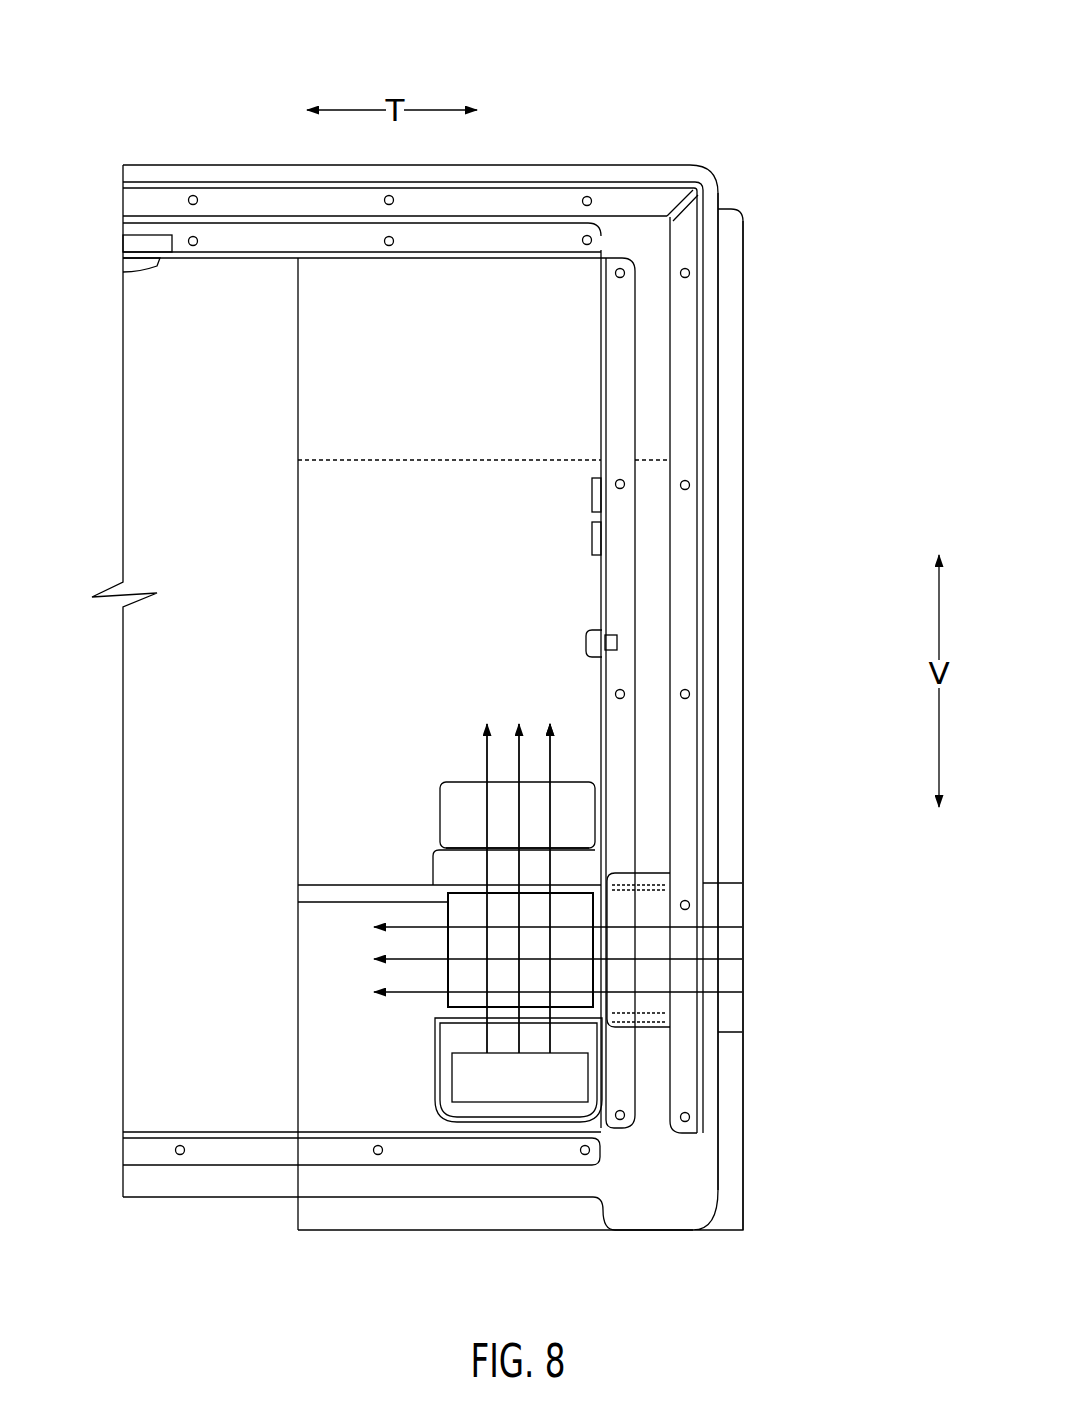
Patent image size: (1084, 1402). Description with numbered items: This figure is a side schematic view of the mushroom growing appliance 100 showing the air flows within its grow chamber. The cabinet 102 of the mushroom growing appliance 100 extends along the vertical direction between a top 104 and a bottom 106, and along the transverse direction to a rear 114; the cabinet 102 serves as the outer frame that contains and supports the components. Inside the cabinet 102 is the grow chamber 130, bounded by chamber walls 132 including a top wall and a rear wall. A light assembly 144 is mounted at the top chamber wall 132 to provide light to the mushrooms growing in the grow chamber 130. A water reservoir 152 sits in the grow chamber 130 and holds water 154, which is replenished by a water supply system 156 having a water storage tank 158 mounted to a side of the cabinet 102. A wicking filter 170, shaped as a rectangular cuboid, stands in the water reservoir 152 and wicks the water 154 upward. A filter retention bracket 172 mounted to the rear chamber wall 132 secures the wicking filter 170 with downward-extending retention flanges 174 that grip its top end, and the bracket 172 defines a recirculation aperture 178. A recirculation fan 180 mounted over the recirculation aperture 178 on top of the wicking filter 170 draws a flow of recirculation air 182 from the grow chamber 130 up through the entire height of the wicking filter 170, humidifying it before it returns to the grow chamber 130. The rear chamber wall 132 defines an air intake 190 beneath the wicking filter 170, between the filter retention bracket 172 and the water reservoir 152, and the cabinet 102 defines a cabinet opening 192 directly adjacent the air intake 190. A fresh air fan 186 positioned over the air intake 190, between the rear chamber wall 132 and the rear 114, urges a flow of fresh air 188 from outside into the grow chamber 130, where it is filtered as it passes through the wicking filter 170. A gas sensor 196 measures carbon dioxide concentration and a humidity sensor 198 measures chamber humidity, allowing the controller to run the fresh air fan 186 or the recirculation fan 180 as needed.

The mushroom growing appliance 100 is at (767, 85).
The cabinet 102 is at (722, 236).
The top 104 is at (623, 160).
The bottom 106 is at (525, 1199).
The rear 114 is at (745, 323).
The grow chamber 130 is at (170, 632).
The chamber walls 132 is at (232, 250).
The light assembly 144 is at (140, 276).
The water reservoir 152 is at (433, 1086).
The water 154 is at (573, 1080).
The water supply system 156 is at (747, 365).
The water storage tank 158 is at (298, 549).
The wicking filter 170 is at (575, 911).
The filter retention bracket 172 is at (430, 862).
The retention flanges 174 is at (442, 872).
The recirculation aperture 178 is at (582, 843).
The recirculation fan 180 is at (568, 802).
The flow of recirculation air 182 is at (486, 815).
The fresh air fan 186 is at (658, 895).
The flow of fresh air 188 is at (413, 993).
The air intake 190 is at (611, 1007).
The cabinet opening 192 is at (744, 1003).
The gas sensor 196 is at (600, 495).
The humidity sensor 198 is at (600, 540).